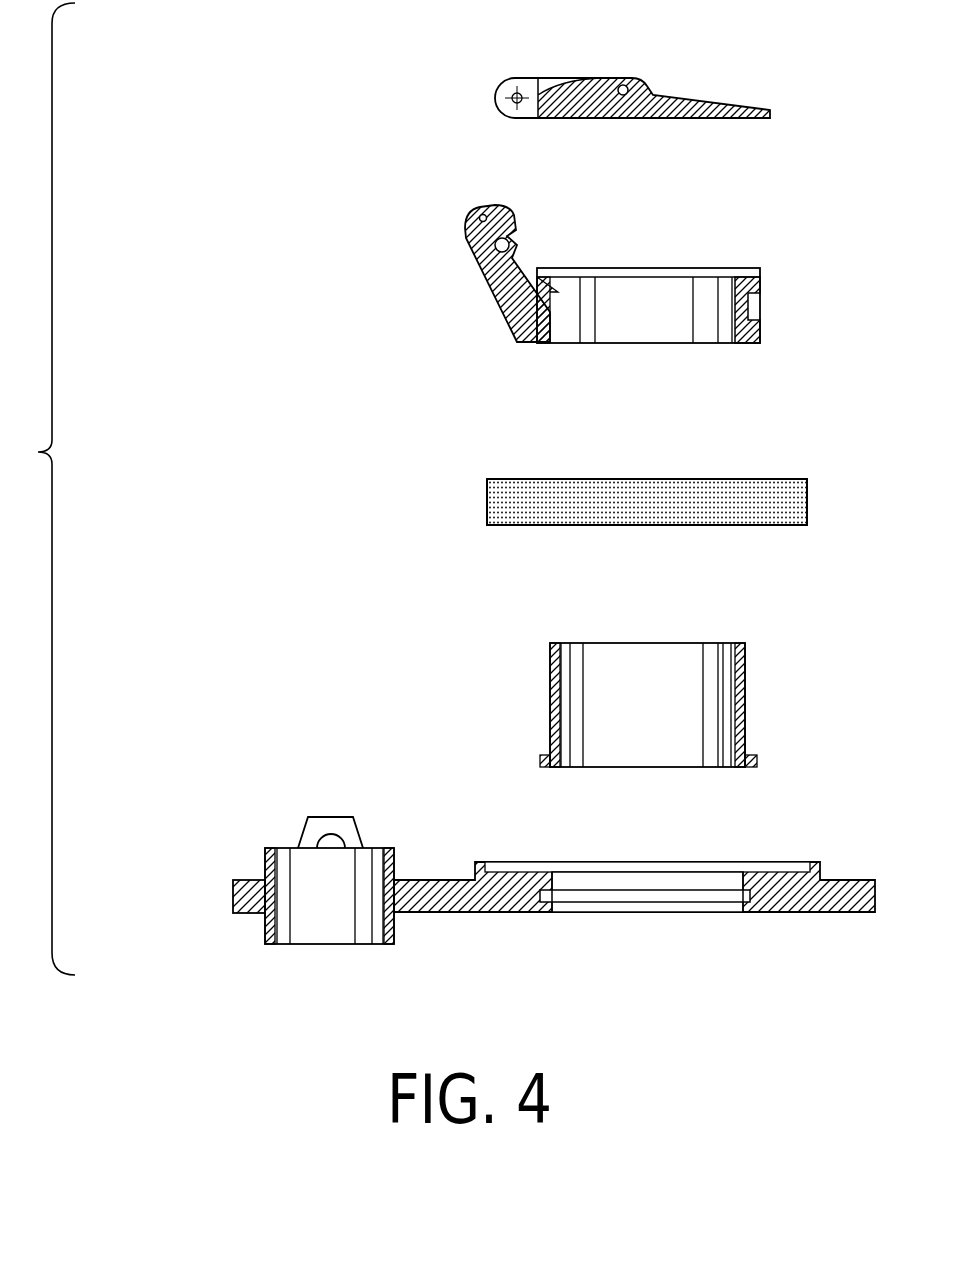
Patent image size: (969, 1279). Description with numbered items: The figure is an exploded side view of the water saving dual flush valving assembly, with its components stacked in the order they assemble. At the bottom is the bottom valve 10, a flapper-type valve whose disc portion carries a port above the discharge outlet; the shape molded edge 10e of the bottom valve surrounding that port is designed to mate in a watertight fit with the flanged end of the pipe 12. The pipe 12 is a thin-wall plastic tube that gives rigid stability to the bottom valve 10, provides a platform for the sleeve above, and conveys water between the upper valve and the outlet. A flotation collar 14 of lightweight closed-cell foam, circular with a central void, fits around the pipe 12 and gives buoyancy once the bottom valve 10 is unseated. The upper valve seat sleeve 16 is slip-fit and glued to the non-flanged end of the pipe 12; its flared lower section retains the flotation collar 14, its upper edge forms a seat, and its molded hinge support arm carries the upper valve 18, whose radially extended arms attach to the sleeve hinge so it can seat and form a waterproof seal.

The bottom valve 10 is at (416, 786).
The shape molded edge of the bottom valve 10e is at (545, 893).
The pipe 12 is at (504, 671).
The flotation collar 14 is at (457, 446).
The upper valve seat sleeve 16 is at (456, 204).
The upper valve 18 is at (464, 49).